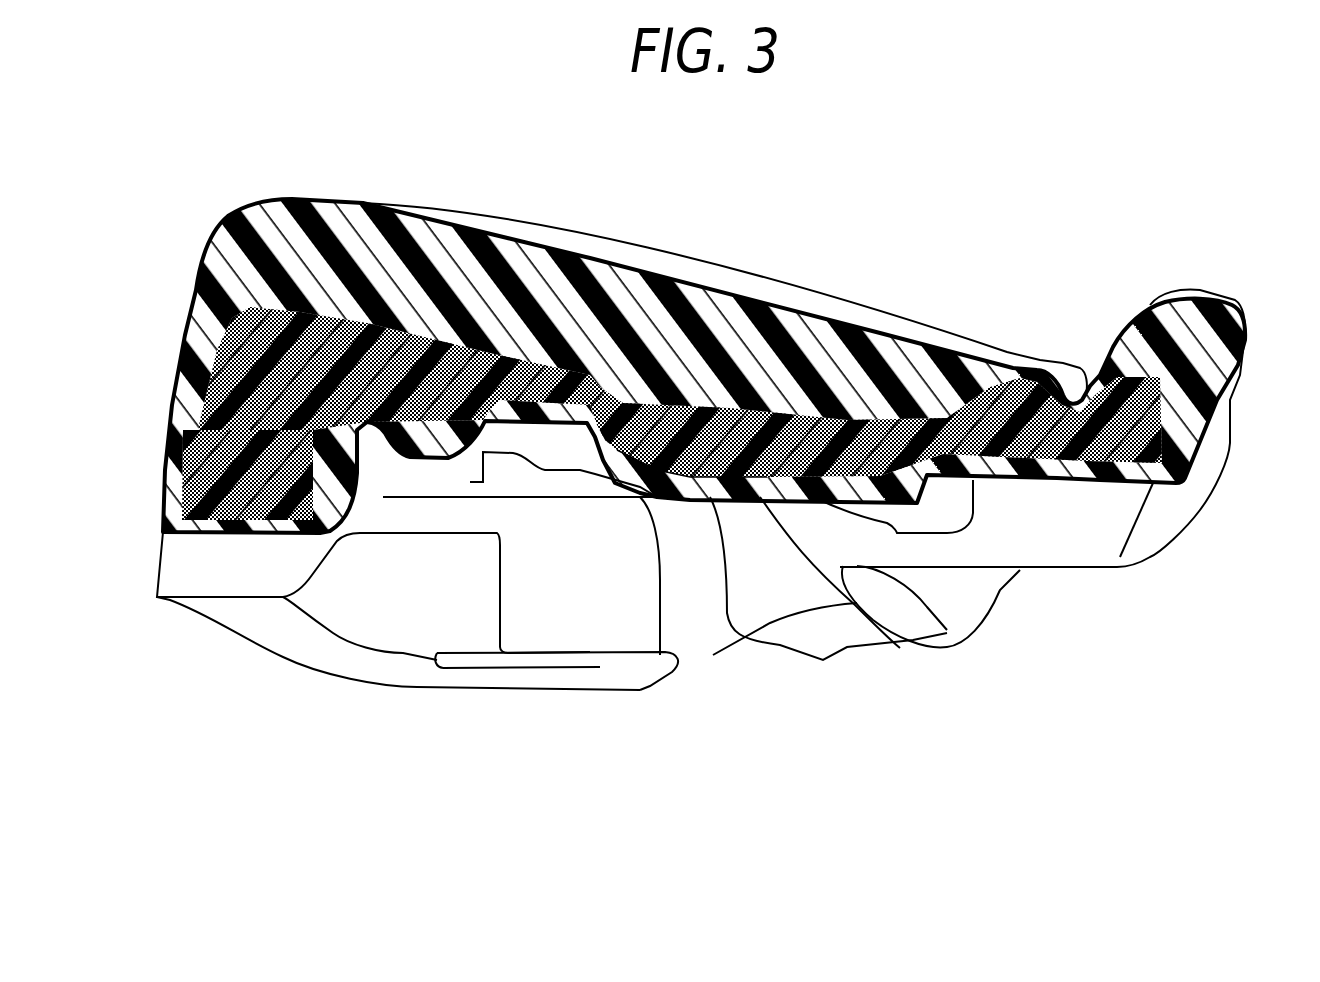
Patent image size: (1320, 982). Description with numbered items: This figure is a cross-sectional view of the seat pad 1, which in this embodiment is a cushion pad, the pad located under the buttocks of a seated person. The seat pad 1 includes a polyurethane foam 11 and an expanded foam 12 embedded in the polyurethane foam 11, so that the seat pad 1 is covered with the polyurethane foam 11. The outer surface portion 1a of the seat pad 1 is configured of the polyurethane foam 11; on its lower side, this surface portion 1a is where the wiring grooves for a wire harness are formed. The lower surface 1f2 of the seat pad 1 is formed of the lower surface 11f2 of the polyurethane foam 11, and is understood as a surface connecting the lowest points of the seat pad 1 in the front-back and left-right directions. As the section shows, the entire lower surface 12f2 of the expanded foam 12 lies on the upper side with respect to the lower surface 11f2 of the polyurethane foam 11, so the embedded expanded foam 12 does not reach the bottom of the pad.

The seat pad 1 is at (701, 467).
The polyurethane foam 11 is at (704, 431).
The expanded foam 12 is at (813, 490).
The surface portion 1a is at (912, 362).
The lower surface of the seat pad 1f2 is at (462, 465).
The lower surface of the polyurethane foam 11f2 is at (447, 592).
The lower surface of the expanded foam 12f2 is at (658, 470).